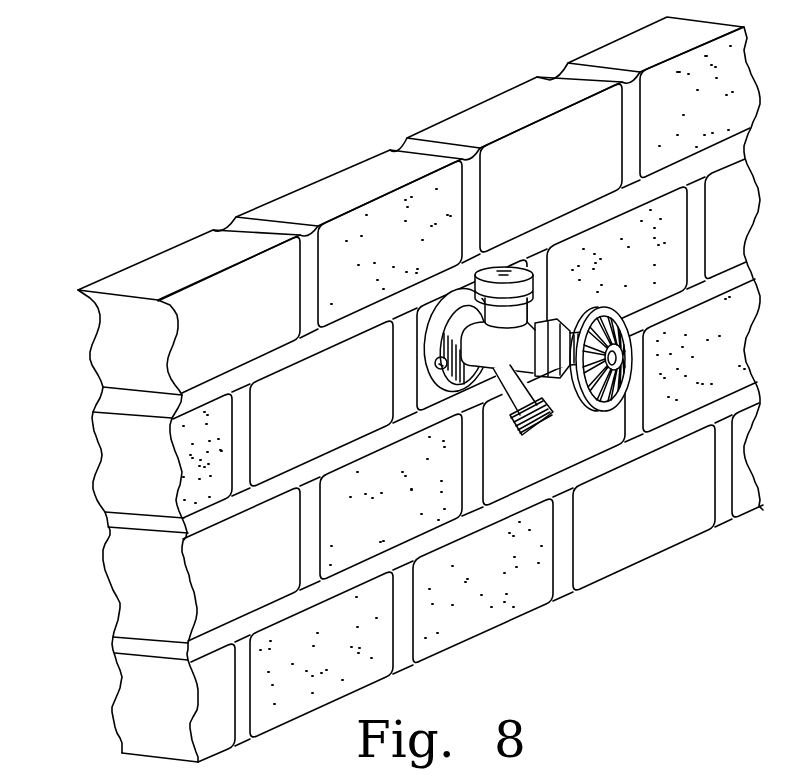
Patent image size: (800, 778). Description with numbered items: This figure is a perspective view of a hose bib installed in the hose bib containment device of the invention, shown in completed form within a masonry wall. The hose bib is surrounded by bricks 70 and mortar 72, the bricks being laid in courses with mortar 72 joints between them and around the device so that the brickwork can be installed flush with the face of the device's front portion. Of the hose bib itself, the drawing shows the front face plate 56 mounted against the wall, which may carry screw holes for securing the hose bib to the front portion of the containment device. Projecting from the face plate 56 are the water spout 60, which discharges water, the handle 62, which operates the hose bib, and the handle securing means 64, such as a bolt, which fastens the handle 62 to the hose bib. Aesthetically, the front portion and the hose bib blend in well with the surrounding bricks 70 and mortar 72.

The front face plate 56 is at (425, 352).
The water spout 60 is at (522, 418).
The handle 62 is at (602, 410).
The handle securing means 64 is at (620, 372).
The bricks 70 is at (222, 312).
The mortar 72 is at (590, 76).